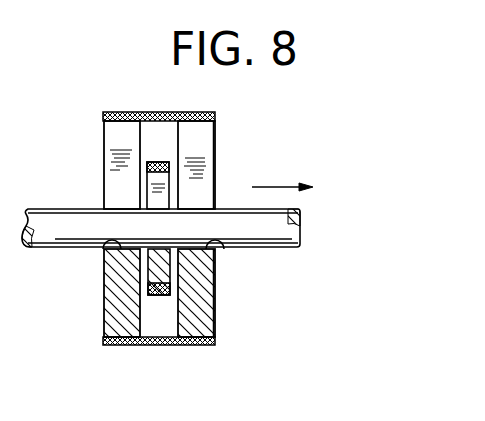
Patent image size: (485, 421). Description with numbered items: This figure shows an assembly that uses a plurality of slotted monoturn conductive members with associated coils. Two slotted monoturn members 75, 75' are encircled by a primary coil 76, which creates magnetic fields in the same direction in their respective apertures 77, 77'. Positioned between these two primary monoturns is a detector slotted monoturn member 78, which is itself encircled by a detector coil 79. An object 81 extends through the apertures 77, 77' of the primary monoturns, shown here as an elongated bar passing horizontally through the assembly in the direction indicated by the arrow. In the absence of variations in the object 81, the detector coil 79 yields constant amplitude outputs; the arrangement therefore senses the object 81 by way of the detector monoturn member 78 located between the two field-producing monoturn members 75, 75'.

The primary coil 76 is at (152, 112).
The detector coil 79 is at (160, 162).
The object 81 is at (60, 222).
The aperture 77 is at (88, 257).
The aperture 77' is at (236, 261).
The detector slotted monoturn member 78 is at (168, 272).
The slotted monoturn member 75 is at (94, 293).
The slotted monoturn member 75' is at (221, 293).